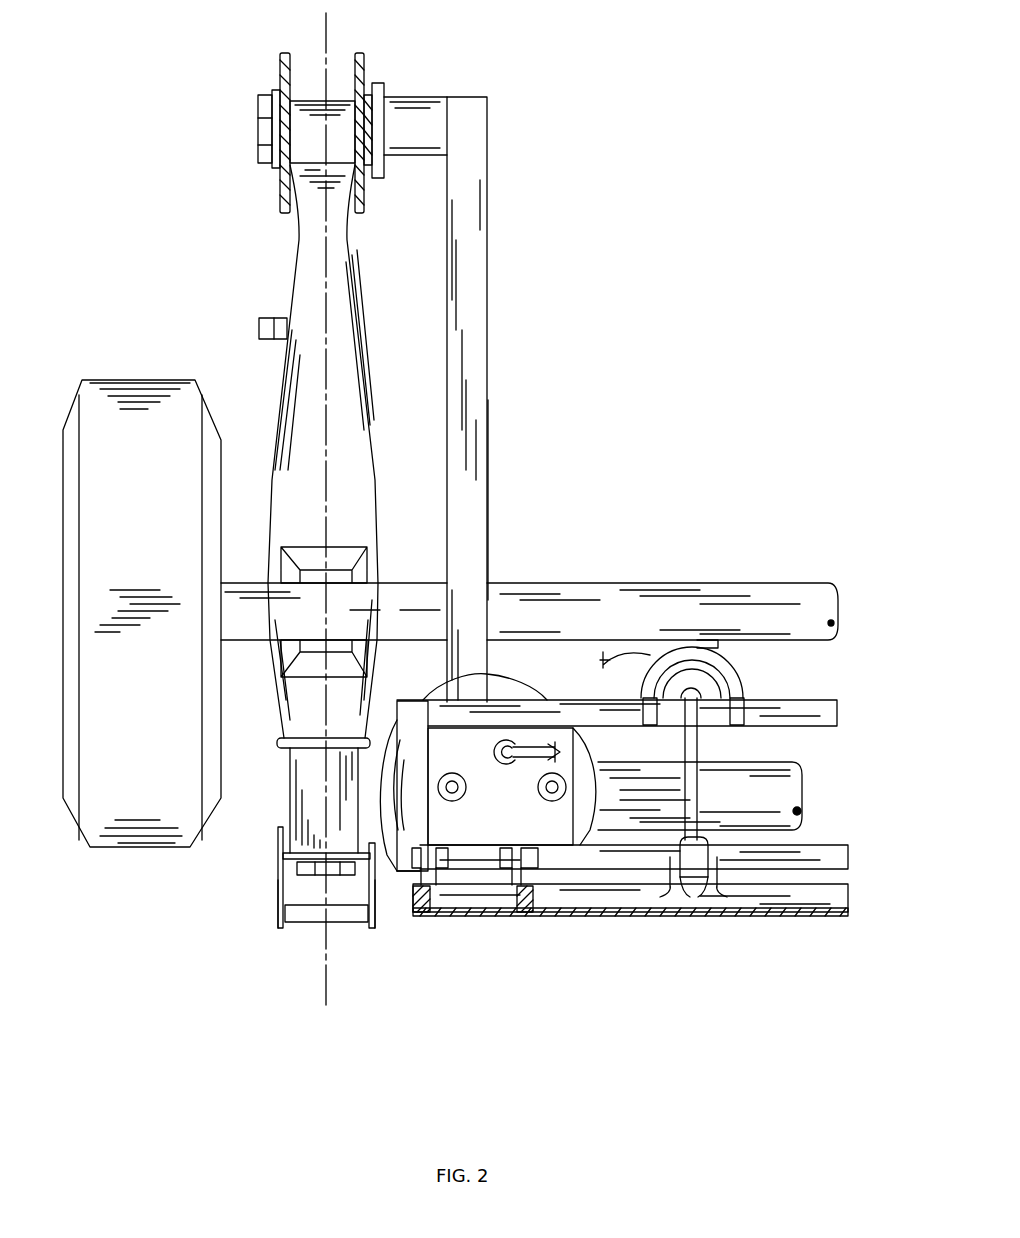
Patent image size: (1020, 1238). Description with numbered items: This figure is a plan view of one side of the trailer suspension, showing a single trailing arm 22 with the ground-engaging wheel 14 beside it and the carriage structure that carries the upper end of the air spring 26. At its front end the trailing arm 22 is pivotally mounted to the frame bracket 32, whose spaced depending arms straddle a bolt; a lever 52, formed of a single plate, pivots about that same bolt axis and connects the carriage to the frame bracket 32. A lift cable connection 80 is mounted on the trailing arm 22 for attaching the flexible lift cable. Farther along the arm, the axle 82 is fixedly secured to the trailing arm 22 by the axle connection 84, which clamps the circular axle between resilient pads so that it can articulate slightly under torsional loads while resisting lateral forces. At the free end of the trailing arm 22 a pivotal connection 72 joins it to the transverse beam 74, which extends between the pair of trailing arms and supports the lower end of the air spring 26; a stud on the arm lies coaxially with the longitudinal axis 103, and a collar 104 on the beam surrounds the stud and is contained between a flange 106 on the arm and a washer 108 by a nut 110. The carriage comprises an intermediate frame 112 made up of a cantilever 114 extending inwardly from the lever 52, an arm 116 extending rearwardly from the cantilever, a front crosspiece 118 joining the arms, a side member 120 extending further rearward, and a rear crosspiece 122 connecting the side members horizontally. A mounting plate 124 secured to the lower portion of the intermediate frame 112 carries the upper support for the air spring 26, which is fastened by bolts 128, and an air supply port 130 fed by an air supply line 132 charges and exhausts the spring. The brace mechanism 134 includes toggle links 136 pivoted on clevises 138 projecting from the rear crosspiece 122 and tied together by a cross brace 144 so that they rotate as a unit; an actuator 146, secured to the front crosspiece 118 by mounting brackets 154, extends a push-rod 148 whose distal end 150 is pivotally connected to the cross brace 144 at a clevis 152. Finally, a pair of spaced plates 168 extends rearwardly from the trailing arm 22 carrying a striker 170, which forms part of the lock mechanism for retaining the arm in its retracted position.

The ground-engaging wheel 14 is at (128, 443).
The trailing arm 22 is at (300, 375).
The primary air spring 26 is at (600, 790).
The frame bracket 32 is at (282, 62).
The lever 52 is at (385, 90).
The pivotal connection 72 is at (258, 893).
The transverse beam 74 is at (810, 770).
The lift cable connection 80 is at (268, 318).
The axle 82 is at (610, 597).
The axle connection 84 is at (386, 568).
The longitudinal axis 103 is at (330, 996).
The collar 104 is at (310, 803).
The flange 106 is at (300, 748).
The washer 108 is at (290, 848).
The nut 110 is at (298, 868).
The intermediate frame 112 is at (490, 519).
The cantilever 114 is at (418, 110).
The arm 116 is at (475, 322).
The front crosspiece 118 is at (805, 707).
The side member 120 is at (408, 725).
The rear crosspiece 122 is at (822, 855).
The mounting plate 124 is at (490, 745).
The bolts 128 is at (460, 800).
The air supply port 130 is at (495, 752).
The air supply line 132 is at (523, 760).
The brace mechanism 134 is at (828, 927).
The toggle link 136 is at (470, 914).
The clevis 138 is at (416, 914).
The cross brace 144 is at (650, 905).
The actuator 146 is at (718, 672).
The push-rod 148 is at (698, 745).
The distal end 150 is at (700, 840).
The clevis 152 is at (712, 882).
The mounting bracket 154 is at (740, 712).
The spaced plates 168 is at (278, 912).
The striker 170 is at (313, 922).